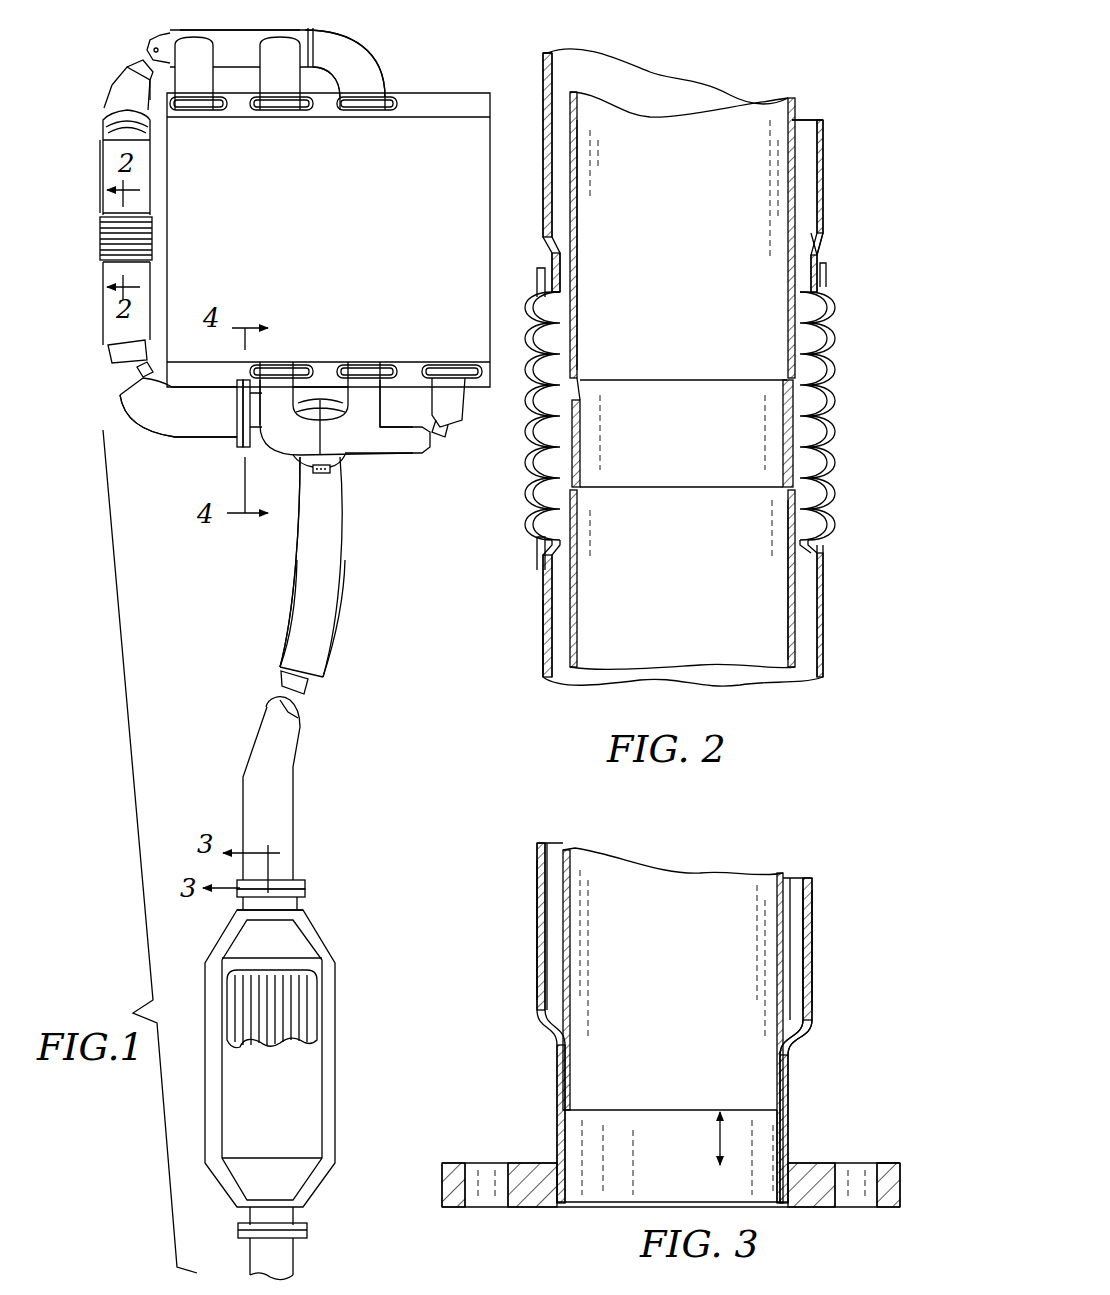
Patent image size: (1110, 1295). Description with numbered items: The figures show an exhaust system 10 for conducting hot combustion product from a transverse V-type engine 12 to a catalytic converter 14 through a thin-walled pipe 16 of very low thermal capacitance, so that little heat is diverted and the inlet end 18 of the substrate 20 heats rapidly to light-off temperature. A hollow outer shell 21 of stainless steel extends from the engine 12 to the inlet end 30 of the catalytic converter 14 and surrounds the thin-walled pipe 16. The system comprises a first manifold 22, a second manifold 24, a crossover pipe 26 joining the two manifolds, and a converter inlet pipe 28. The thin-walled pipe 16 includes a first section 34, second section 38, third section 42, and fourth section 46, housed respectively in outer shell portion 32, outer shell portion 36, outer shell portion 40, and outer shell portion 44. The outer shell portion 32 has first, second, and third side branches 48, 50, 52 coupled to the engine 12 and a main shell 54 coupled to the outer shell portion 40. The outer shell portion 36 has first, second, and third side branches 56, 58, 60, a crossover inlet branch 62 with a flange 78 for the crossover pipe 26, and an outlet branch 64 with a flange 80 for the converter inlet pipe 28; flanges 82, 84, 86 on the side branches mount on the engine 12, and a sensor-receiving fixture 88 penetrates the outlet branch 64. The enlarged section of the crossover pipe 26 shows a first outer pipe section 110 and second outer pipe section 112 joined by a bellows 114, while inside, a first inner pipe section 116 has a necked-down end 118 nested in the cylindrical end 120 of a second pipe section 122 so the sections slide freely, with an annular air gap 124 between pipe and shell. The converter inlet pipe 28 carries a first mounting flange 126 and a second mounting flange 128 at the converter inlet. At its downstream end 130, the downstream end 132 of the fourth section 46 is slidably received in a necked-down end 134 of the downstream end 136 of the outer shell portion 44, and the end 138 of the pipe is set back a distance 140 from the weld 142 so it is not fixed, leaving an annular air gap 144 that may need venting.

In FIG. 1, the exhaust system 10 is at (345, 655).
In FIG. 1, the engine 12 is at (463, 87).
In FIG. 1, the catalytic converter 14 is at (350, 1118).
In FIG. 1, the thin-walled pipe 16 is at (148, 38).
In FIG. 2, the thin-walled pipe 16 is at (682, 132).
In FIG. 3, the thin-walled pipe 16 is at (652, 866).
In FIG. 1, the inlet end 18 is at (268, 980).
In FIG. 1, the substrate 20 is at (285, 1006).
In FIG. 1, the hollow outer shell 21 is at (155, 186).
In FIG. 2, the hollow outer shell 21 is at (826, 684).
In FIG. 3, the hollow outer shell 21 is at (538, 1052).
In FIG. 1, the first manifold 22 is at (377, 47).
In FIG. 1, the second manifold 24 is at (410, 470).
In FIG. 1, the crossover pipe 26 is at (95, 336).
In FIG. 2, the crossover pipe 26 is at (836, 232).
In FIG. 1, the converter inlet pipe 28 is at (278, 640).
In FIG. 3, the converter inlet pipe 28 is at (850, 1009).
In FIG. 1, the inlet end 30 is at (313, 906).
In FIG. 1, the outer shell portion 32 is at (278, 25).
In FIG. 1, the first section 34 is at (118, 62).
In FIG. 1, the outer shell portion 36 is at (388, 467).
In FIG. 1, the second section 38 is at (420, 428).
In FIG. 1, the outer shell portion 40 is at (112, 158).
In FIG. 2, the outer shell portion 40 is at (842, 528).
In FIG. 1, the third section 42 is at (133, 388).
In FIG. 2, the third section 42 is at (798, 104).
In FIG. 1, the outer shell portion 44 is at (277, 665).
In FIG. 3, the outer shell portion 44 is at (818, 991).
In FIG. 1, the fourth section 46 is at (285, 681).
In FIG. 3, the fourth section 46 is at (781, 938).
In FIG. 1, the first side branch 48 is at (368, 74).
In FIG. 1, the second side branch 50 is at (288, 110).
In FIG. 1, the third side branch 52 is at (207, 110).
In FIG. 1, the main shell 54 is at (237, 30).
In FIG. 1, the first side branch 56 is at (440, 377).
In FIG. 1, the second side branch 58 is at (372, 390).
In FIG. 1, the third side branch 60 is at (288, 380).
In FIG. 1, the crossover inlet branch 62 is at (258, 428).
In FIG. 1, the outlet branch 64 is at (313, 468).
In FIG. 1, the flange 78 is at (245, 405).
In FIG. 1, the flange 80 is at (352, 468).
In FIG. 1, the flange 82 is at (445, 377).
In FIG. 1, the flange 84 is at (354, 380).
In FIG. 1, the flange 86 is at (261, 377).
In FIG. 1, the sensor-receiving fixture 88 is at (322, 482).
In FIG. 1, the first outer pipe section 110 is at (152, 202).
In FIG. 2, the first outer pipe section 110 is at (827, 165).
In FIG. 1, the second outer pipe section 112 is at (152, 277).
In FIG. 2, the second outer pipe section 112 is at (822, 662).
In FIG. 1, the bellows 114 is at (152, 240).
In FIG. 2, the bellows 114 is at (815, 337).
In FIG. 2, the first inner pipe section 116 is at (788, 237).
In FIG. 2, the necked-down end 118 is at (785, 463).
In FIG. 2, the cylindrical end 120 is at (795, 438).
In FIG. 2, the second pipe section 122 is at (792, 622).
In FIG. 2, the annular air gap 124 is at (568, 82).
In FIG. 1, the first mounting flange 126 is at (323, 400).
In FIG. 1, the second mounting flange 128 is at (305, 880).
In FIG. 3, the second mounting flange 128 is at (871, 1158).
In FIG. 1, the downstream end 130 is at (307, 891).
In FIG. 3, the downstream end 130 is at (796, 1073).
In FIG. 3, the downstream end 132 is at (773, 1037).
In FIG. 3, the necked-down end 134 is at (789, 1131).
In FIG. 3, the downstream end 136 is at (532, 952).
In FIG. 3, the end 138 is at (730, 1167).
In FIG. 3, the distance 140 is at (716, 1137).
In FIG. 3, the weld 142 is at (555, 1162).
In FIG. 3, the annular air gap 144 is at (553, 866).